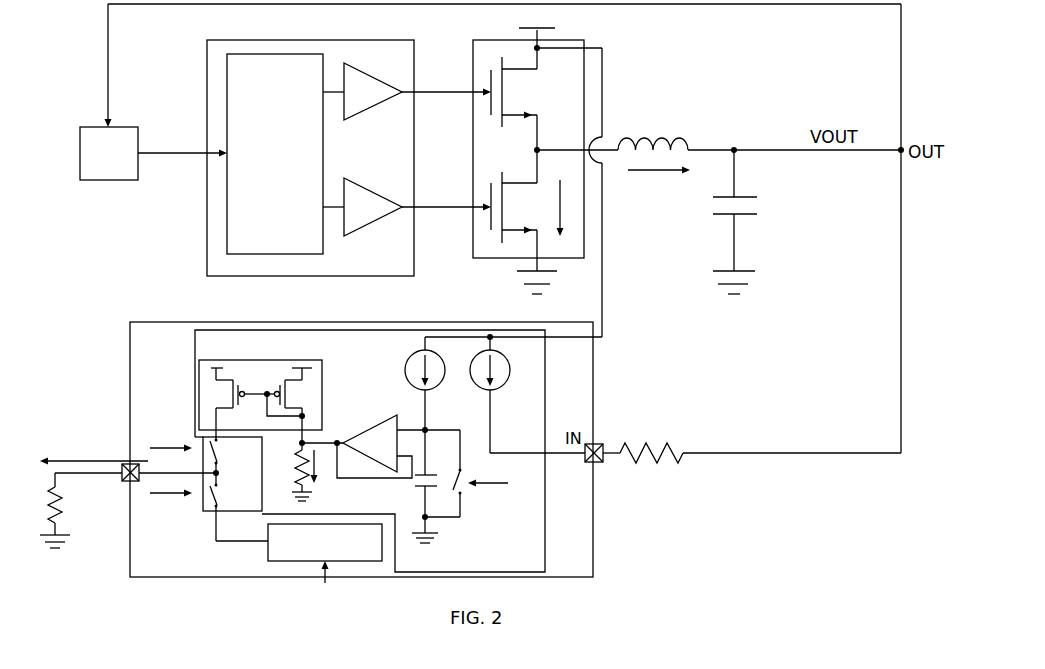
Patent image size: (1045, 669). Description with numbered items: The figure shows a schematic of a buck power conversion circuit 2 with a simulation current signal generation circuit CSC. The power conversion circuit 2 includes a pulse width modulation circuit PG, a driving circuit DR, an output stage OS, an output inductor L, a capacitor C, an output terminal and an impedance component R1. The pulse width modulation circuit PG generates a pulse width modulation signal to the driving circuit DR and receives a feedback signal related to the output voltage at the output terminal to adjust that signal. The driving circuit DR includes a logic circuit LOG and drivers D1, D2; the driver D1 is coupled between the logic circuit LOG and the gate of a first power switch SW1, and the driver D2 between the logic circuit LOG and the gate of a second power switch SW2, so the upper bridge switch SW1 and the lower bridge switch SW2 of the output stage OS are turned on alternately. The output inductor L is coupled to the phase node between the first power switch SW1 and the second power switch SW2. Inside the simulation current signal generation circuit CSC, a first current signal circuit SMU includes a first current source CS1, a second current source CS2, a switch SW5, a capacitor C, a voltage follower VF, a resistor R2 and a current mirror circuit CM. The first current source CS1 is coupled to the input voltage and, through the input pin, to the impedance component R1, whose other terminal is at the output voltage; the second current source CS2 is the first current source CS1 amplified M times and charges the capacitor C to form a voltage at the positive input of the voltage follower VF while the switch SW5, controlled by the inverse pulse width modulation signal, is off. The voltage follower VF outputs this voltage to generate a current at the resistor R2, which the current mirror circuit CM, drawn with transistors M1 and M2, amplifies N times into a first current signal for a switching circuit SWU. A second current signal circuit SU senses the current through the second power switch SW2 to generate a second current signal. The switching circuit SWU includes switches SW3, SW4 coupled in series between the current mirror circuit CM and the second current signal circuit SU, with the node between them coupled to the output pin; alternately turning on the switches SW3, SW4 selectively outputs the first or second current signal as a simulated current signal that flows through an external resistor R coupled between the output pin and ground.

The buck power conversion circuit 2 is at (69, 46).
The pulse width modulation circuit PG is at (122, 165).
The driving circuit DR is at (233, 40).
The logic circuit LOG is at (296, 163).
The driver D1 is at (377, 101).
The driver D2 is at (377, 216).
The output stage OS is at (485, 40).
The first power switch SW1 is at (516, 103).
The second power switch SW2 is at (516, 210).
The output inductor L is at (719, 157).
The capacitor C is at (742, 235).
The impedance component R1 is at (752, 442).
The simulation current signal generation circuit CSC is at (172, 349).
The first current signal circuit SMU is at (194, 355).
The current mirror circuit CM is at (322, 370).
The first transistor M1 is at (288, 405).
The second transistor M2 is at (234, 404).
The switching circuit SWU is at (212, 512).
The switch SW3 is at (232, 455).
The switch SW4 is at (232, 507).
The resistor R2 is at (309, 476).
The voltage follower VF is at (385, 453).
The first current source CS1 is at (527, 395).
The second current source CS2 is at (409, 406).
The switch SW5 is at (476, 473).
The second current signal circuit SU is at (333, 553).
The external resistor R is at (123, 507).